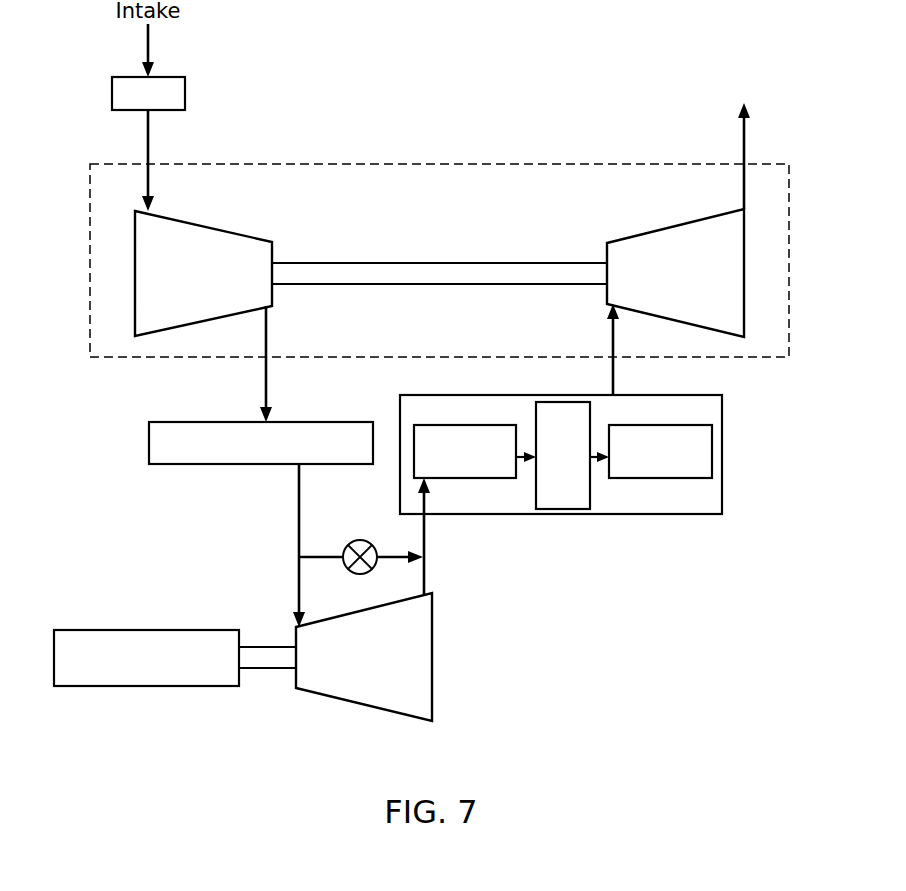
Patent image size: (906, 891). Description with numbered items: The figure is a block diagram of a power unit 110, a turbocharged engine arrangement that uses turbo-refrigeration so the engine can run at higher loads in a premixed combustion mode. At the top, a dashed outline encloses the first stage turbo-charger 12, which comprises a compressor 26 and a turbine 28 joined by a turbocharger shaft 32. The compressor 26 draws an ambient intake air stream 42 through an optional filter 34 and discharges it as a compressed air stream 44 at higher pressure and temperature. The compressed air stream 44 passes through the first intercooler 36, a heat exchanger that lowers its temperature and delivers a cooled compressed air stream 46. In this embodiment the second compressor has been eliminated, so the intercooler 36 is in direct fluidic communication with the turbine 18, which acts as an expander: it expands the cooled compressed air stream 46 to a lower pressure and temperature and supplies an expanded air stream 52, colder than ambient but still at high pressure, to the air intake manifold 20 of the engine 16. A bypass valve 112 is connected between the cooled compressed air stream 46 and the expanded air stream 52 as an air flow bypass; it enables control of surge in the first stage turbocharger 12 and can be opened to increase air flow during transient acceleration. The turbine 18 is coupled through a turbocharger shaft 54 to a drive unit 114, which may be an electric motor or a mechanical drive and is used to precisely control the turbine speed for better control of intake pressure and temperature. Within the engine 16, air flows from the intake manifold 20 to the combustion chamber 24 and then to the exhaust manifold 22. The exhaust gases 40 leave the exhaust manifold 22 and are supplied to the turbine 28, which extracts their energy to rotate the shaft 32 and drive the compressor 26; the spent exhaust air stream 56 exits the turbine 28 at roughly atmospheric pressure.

The power unit 110 is at (512, 76).
The first stage turbo-charger 12 is at (90, 206).
The filter 34 is at (185, 90).
The ambient intake air stream 42 is at (148, 128).
The compressor 26 is at (135, 272).
The turbocharger shaft 32 is at (440, 262).
The turbine 28 is at (744, 270).
The exhaust air stream 56 is at (744, 178).
The compressed air stream 44 is at (266, 376).
The first intercooler 36 is at (149, 442).
The cooled compressed air stream 46 is at (299, 508).
The bypass valve 112 is at (358, 540).
The expanded air stream 52 is at (428, 575).
The turbine 18 is at (432, 657).
The turbocharger shaft 54 is at (272, 670).
The drive unit 114 is at (98, 630).
The engine 16 is at (722, 500).
The air intake manifold 20 is at (440, 425).
The combustion chamber 24 is at (562, 402).
The exhaust manifold 22 is at (712, 428).
The exhaust gases 40 is at (613, 365).